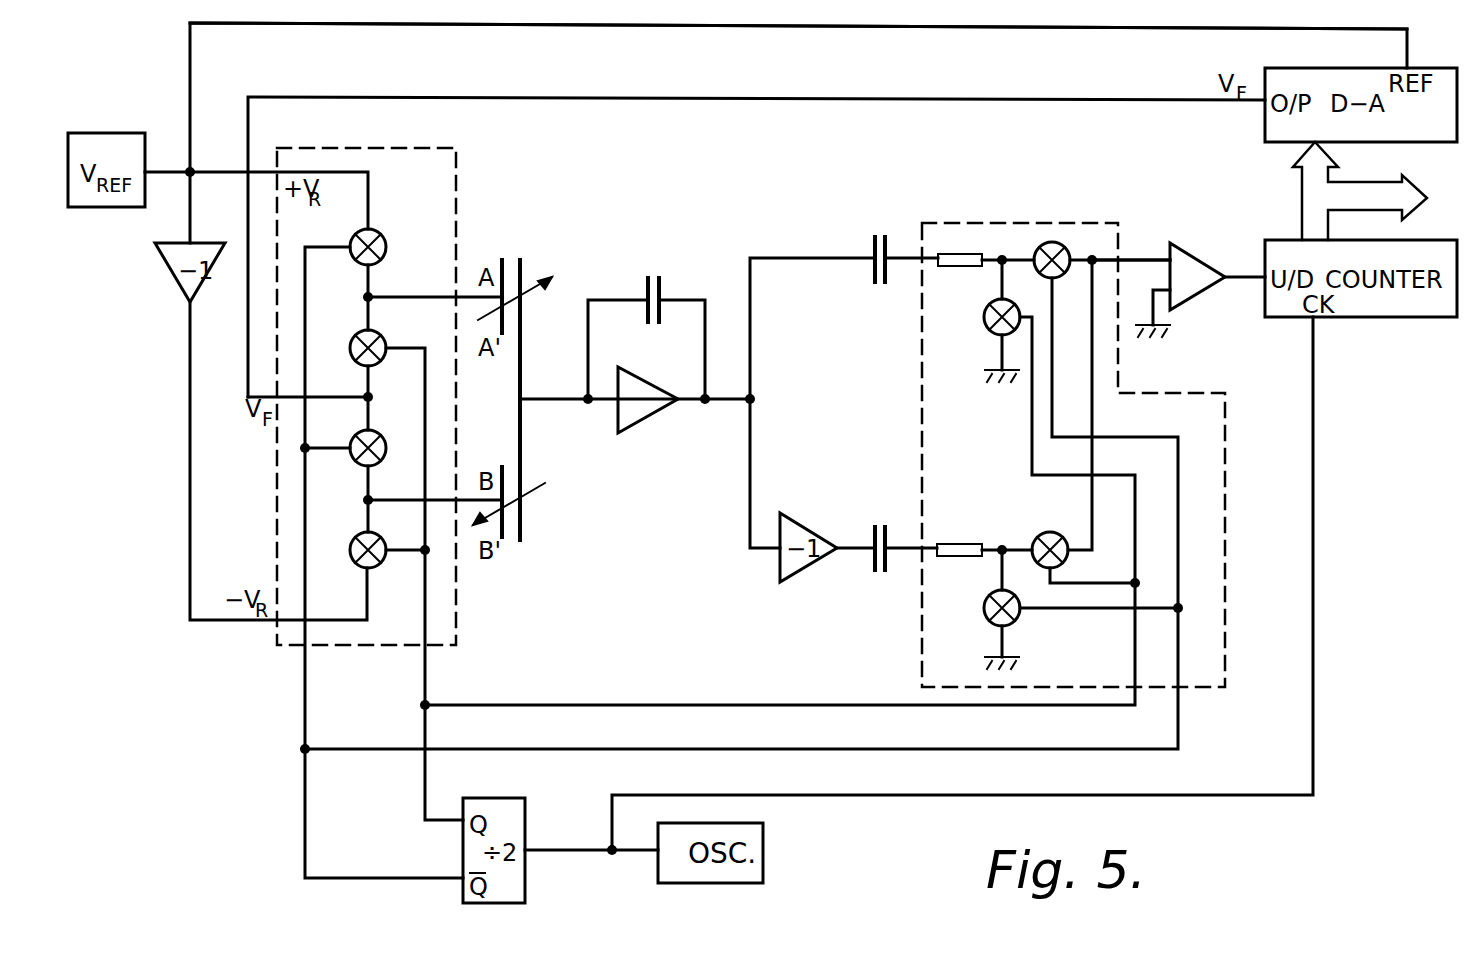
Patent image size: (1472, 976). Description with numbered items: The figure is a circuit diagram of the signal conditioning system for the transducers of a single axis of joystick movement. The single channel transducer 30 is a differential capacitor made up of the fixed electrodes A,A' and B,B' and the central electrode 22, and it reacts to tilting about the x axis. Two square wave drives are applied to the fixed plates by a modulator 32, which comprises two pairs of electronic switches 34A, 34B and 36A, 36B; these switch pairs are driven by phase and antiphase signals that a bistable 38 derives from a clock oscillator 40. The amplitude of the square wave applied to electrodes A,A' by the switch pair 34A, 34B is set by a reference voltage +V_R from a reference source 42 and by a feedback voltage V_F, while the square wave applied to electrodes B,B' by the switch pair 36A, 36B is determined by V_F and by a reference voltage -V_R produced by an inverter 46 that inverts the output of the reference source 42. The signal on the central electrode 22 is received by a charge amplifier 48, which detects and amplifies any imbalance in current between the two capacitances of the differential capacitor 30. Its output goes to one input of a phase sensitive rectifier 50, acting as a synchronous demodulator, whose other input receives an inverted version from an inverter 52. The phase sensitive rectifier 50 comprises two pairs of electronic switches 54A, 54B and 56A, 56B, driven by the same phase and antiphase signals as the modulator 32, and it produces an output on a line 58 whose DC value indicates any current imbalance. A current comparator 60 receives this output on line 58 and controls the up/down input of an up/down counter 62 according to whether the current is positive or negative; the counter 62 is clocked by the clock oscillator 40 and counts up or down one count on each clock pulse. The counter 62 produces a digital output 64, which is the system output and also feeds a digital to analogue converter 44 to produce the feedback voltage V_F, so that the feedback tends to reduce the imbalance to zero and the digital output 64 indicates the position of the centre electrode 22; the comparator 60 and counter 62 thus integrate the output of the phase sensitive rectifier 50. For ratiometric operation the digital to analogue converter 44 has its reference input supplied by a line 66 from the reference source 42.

The central electrode 22 is at (523, 433).
The single channel transducer 30 is at (537, 517).
The modulator 32 is at (458, 157).
The electronic switch 34A is at (384, 233).
The electronic switch 34B is at (383, 337).
The electronic switch 36A is at (352, 463).
The electronic switch 36B is at (352, 556).
The bistable 38 is at (527, 872).
The clock oscillator 40 is at (765, 843).
The reference source 42 is at (110, 132).
The digital to analogue converter 44 is at (1263, 118).
The inverter 46 is at (172, 284).
The charge amplifier 48 is at (660, 425).
The phase sensitive rectifier 50 is at (962, 222).
The inverter 52 is at (803, 567).
The electronic switch 54A is at (1046, 242).
The electronic switch 54B is at (984, 321).
The electronic switch 56A is at (1043, 534).
The electronic switch 56B is at (984, 608).
The line 58 is at (1135, 260).
The current comparator 60 is at (1207, 290).
The up/down counter 62 is at (1415, 320).
The digital output 64 is at (1385, 183).
The line 66 is at (790, 28).